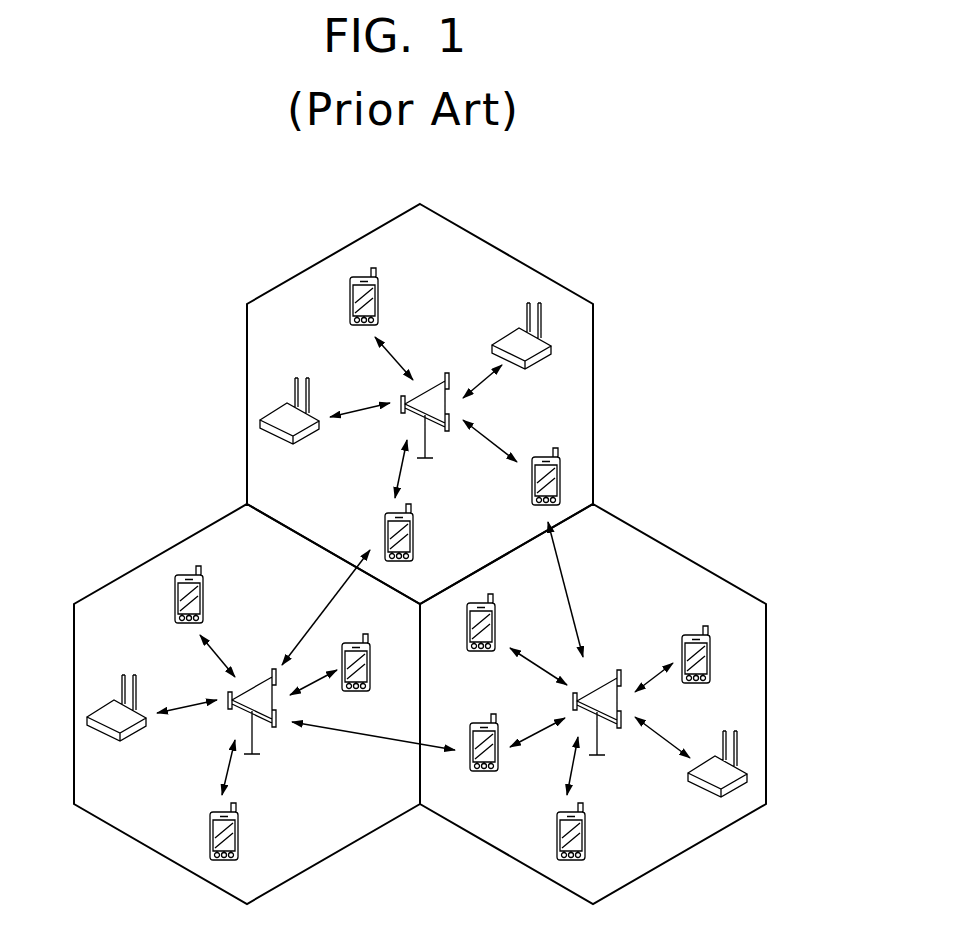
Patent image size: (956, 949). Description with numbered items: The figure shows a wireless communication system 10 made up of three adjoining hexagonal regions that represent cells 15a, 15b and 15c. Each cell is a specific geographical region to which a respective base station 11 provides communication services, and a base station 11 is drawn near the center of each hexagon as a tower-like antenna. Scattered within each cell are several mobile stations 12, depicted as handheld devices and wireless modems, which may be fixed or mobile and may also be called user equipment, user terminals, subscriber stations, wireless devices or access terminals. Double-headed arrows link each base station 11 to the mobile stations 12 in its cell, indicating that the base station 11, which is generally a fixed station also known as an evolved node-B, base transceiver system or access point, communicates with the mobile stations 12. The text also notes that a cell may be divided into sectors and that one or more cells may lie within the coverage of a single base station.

The wireless communication system 10 is at (668, 312).
The base station 11 is at (435, 382).
The mobile station 12 is at (378, 297).
The cell 15a is at (593, 393).
The cell 15b is at (706, 570).
The cell 15c is at (140, 567).